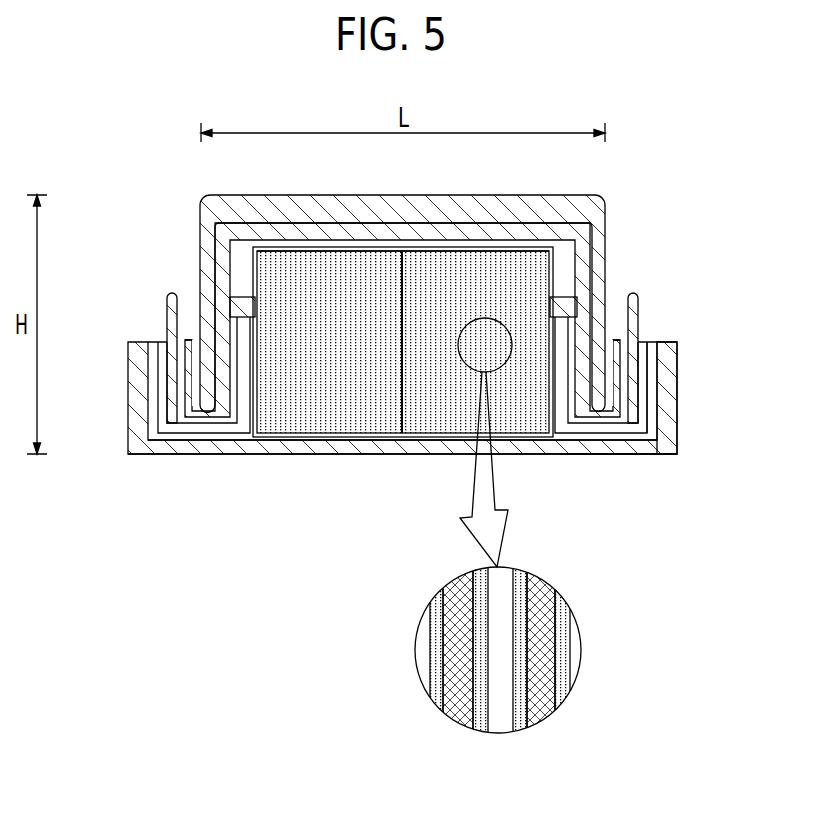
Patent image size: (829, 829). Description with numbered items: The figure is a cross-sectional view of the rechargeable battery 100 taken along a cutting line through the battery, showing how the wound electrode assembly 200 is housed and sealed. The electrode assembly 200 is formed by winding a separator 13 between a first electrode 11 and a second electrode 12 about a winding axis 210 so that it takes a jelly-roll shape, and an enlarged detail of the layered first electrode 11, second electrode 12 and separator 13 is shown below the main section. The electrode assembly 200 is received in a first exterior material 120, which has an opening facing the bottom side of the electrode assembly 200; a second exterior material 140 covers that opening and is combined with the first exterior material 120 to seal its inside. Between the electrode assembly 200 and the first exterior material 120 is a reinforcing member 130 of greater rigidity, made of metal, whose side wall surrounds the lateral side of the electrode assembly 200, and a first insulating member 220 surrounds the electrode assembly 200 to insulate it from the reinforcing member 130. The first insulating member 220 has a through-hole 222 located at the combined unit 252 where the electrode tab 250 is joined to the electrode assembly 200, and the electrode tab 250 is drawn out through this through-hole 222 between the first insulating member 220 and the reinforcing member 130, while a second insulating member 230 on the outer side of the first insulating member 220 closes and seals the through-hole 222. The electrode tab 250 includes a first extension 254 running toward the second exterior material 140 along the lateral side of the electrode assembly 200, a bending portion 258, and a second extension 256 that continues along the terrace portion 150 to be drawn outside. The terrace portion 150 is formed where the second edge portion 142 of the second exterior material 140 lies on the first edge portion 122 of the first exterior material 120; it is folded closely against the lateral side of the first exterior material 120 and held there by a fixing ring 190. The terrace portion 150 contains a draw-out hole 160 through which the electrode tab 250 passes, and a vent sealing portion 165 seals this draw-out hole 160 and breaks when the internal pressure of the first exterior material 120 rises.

The first electrode 11 is at (499, 650).
The second electrode 12 is at (521, 650).
The separator 13 is at (478, 650).
The rechargeable battery 100 is at (503, 669).
The first exterior material 120 is at (605, 196).
The first edge portion 122 is at (614, 455).
The reinforcing member 130 is at (617, 343).
The second exterior material 140 is at (395, 442).
The second edge portion 142 is at (652, 413).
The terrace portion 150 is at (681, 353).
The draw-out hole 160 is at (627, 348).
The vent sealing portion 165 is at (659, 342).
The fixing ring 190 is at (678, 390).
The electrode assembly 200 is at (330, 403).
The winding axis 210 is at (414, 297).
The first insulating member 220 is at (498, 245).
The through-hole 222 is at (584, 306).
The second insulating member 230 is at (240, 296).
The electrode tab 250 is at (164, 312).
The combined unit 252 is at (232, 355).
The first extension 254 is at (243, 377).
The second extension 256 is at (188, 440).
The bending portion 258 is at (256, 442).